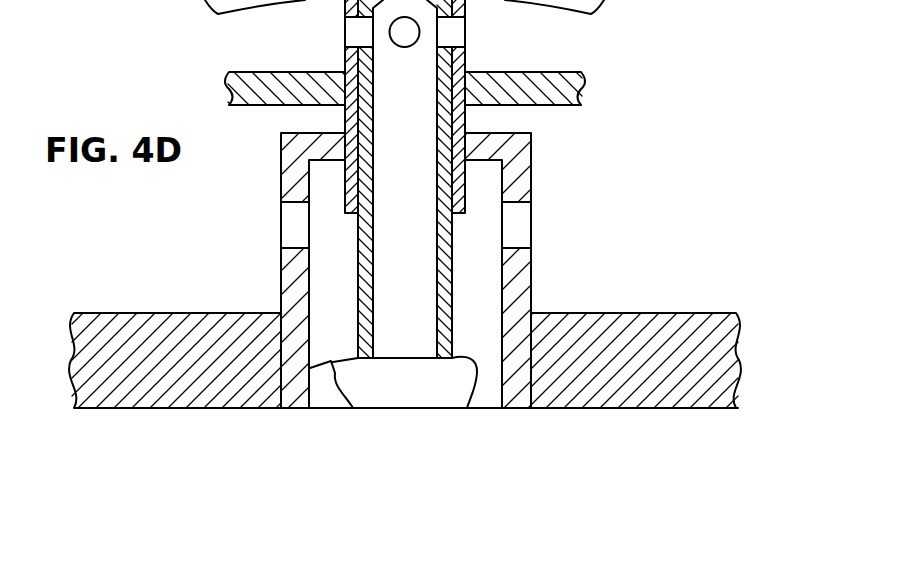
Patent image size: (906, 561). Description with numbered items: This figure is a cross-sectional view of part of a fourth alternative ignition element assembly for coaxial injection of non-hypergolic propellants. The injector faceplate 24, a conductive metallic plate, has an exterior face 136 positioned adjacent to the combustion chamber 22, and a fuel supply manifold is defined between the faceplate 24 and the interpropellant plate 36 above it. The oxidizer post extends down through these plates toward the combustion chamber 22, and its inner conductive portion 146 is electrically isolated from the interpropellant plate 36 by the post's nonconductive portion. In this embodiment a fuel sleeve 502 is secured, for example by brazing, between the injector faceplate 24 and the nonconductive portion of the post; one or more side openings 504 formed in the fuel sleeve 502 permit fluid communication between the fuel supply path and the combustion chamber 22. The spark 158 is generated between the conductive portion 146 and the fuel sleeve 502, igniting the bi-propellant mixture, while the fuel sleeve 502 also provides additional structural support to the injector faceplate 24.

The combustion chamber 22 is at (277, 441).
The injector faceplate 24 is at (717, 367).
The interpropellant plate 36 is at (571, 93).
The exterior face 136 is at (662, 408).
The conductive portion 146 is at (467, 408).
The spark 158 is at (353, 408).
The fuel sleeve 502 is at (531, 166).
The side openings 504 is at (577, 228).